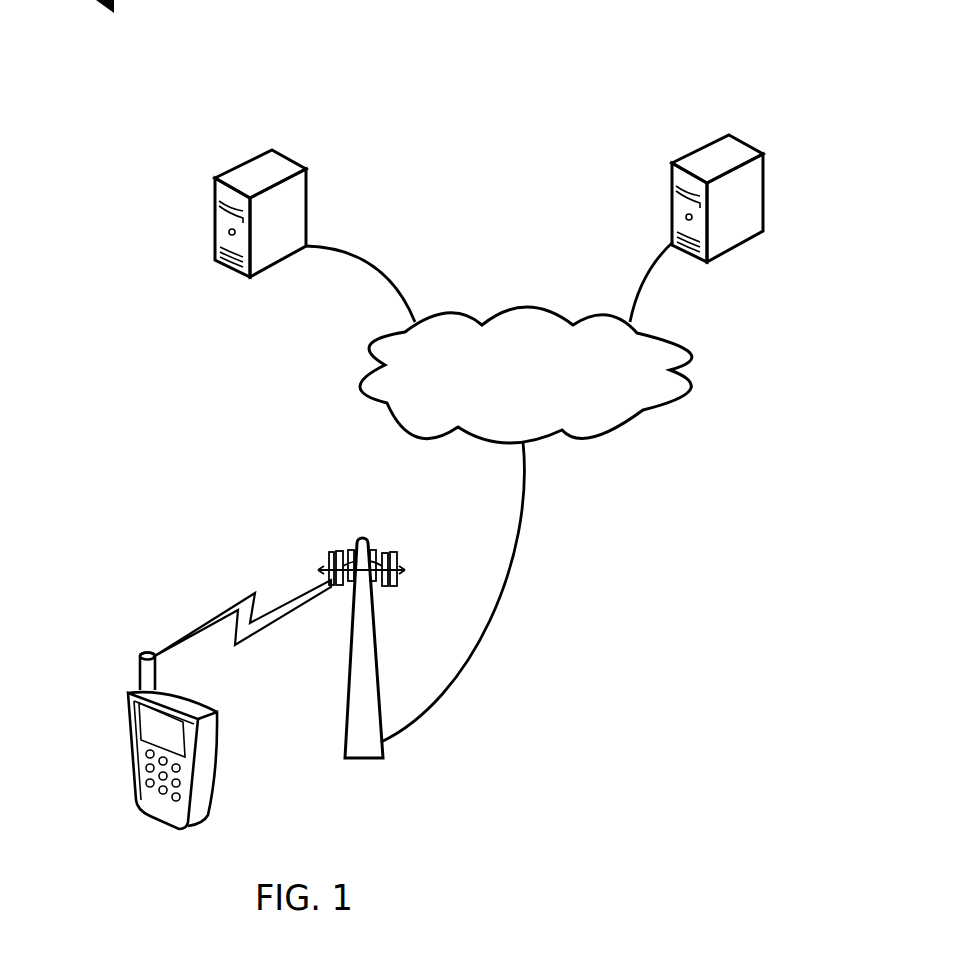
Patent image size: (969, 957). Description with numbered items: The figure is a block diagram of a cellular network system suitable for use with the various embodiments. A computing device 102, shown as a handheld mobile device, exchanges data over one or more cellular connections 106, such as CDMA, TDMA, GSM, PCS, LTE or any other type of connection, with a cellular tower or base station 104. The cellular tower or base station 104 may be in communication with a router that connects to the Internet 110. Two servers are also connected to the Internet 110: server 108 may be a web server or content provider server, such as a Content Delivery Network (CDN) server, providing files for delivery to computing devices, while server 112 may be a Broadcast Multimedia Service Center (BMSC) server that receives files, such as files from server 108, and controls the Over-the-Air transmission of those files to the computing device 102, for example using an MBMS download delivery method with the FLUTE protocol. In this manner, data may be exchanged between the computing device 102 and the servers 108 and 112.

The computing device 102 is at (217, 760).
The cellular tower or base station 104 is at (374, 633).
The cellular connection 106 is at (235, 607).
The server 108 is at (306, 193).
The Internet 110 is at (362, 393).
The server 112 is at (764, 190).